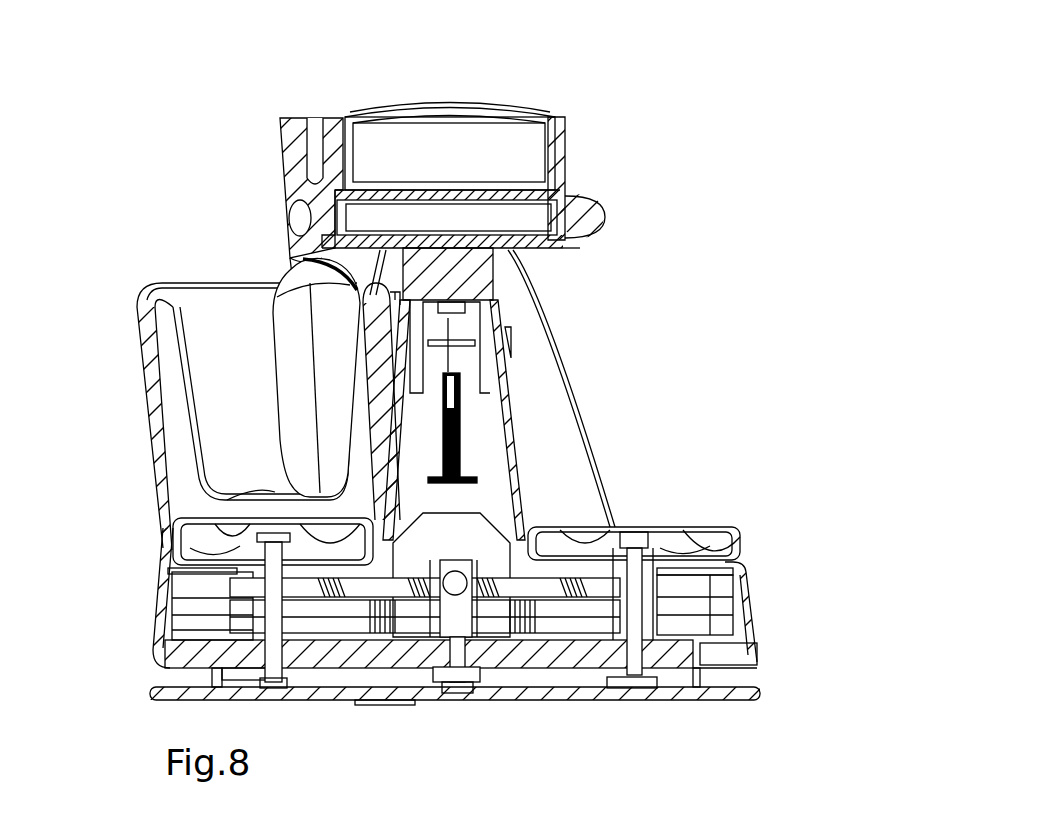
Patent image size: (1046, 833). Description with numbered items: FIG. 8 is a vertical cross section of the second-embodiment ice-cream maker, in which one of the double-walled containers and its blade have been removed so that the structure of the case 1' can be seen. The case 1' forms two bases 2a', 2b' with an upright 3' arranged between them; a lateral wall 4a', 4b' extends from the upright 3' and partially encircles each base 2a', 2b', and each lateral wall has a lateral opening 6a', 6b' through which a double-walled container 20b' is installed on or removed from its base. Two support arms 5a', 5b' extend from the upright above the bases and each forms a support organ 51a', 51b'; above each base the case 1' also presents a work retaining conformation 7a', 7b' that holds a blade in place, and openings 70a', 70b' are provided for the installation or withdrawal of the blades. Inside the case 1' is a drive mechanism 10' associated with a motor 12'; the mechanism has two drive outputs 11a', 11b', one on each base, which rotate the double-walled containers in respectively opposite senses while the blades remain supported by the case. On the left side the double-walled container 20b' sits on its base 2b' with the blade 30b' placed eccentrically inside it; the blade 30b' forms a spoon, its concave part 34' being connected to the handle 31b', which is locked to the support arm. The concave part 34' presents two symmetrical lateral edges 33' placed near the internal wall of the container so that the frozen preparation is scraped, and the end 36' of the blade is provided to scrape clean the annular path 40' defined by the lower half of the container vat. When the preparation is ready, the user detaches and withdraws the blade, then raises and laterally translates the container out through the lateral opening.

The case 1' is at (523, 416).
The base 2a' is at (742, 532).
The base 2b' is at (135, 604).
The upright 3' is at (523, 416).
The lateral wall 4a' is at (573, 388).
The lateral wall 4b' is at (523, 416).
The support arm 5a' is at (523, 416).
The support arm 5b' is at (427, 124).
The lateral opening 6a' is at (703, 466).
The lateral opening 6b' is at (206, 539).
The work retaining conformation 7a' is at (523, 416).
The work retaining conformation 7b' is at (180, 197).
The drive mechanism 10' is at (443, 636).
The drive output 11a' is at (741, 494).
The drive output 11b' is at (139, 565).
The motor 12' is at (509, 658).
The double-walled container 20b' is at (523, 416).
The blade 30b' is at (192, 377).
The handle 31b' is at (523, 416).
The lateral edge 33' is at (191, 400).
The concave part 34' is at (172, 370).
The end 36' is at (523, 398).
The annular path 40' is at (162, 490).
The support organ 51a' is at (652, 160).
The support organ 51b' is at (176, 260).
The opening 70a' is at (668, 240).
The opening 70b' is at (170, 244).